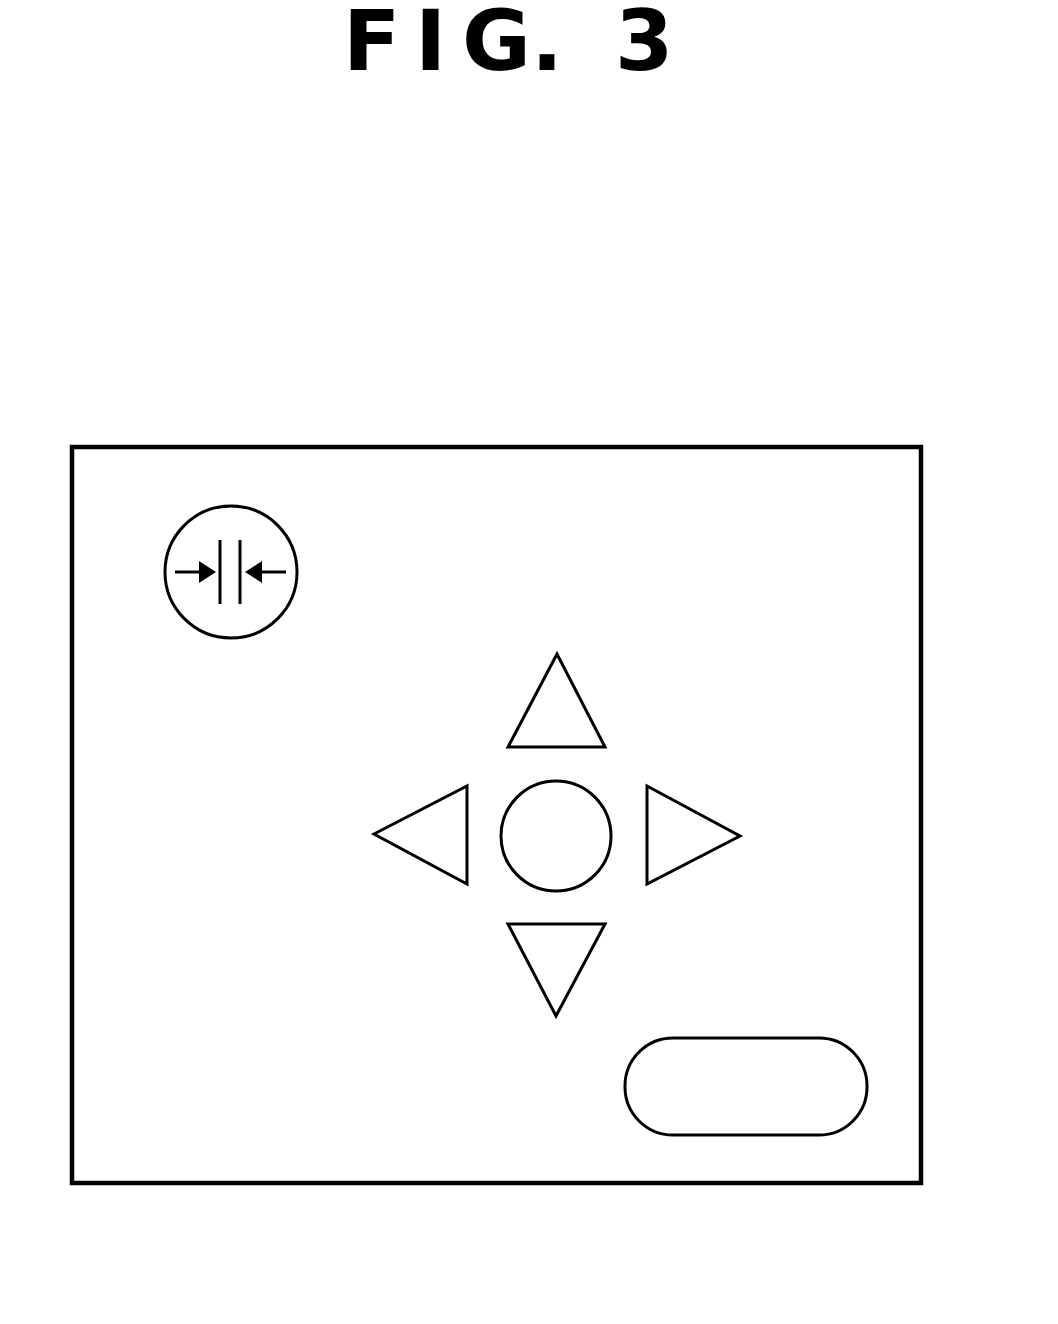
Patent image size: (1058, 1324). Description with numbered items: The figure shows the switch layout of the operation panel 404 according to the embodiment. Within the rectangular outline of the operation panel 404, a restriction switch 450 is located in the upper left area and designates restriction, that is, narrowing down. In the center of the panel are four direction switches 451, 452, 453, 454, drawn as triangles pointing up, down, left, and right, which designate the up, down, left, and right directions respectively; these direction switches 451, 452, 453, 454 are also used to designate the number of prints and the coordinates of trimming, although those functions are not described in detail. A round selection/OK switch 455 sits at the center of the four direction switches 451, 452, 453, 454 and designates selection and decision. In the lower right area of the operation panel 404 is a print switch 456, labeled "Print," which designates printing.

The operation panel 404 is at (720, 449).
The restriction switch 450 is at (231, 506).
The direction switch 451 is at (578, 688).
The direction switch 452 is at (533, 977).
The direction switch 453 is at (420, 808).
The direction switch 454 is at (690, 808).
The selection/OK switch 455 is at (515, 873).
The print switch 456 is at (752, 1136).